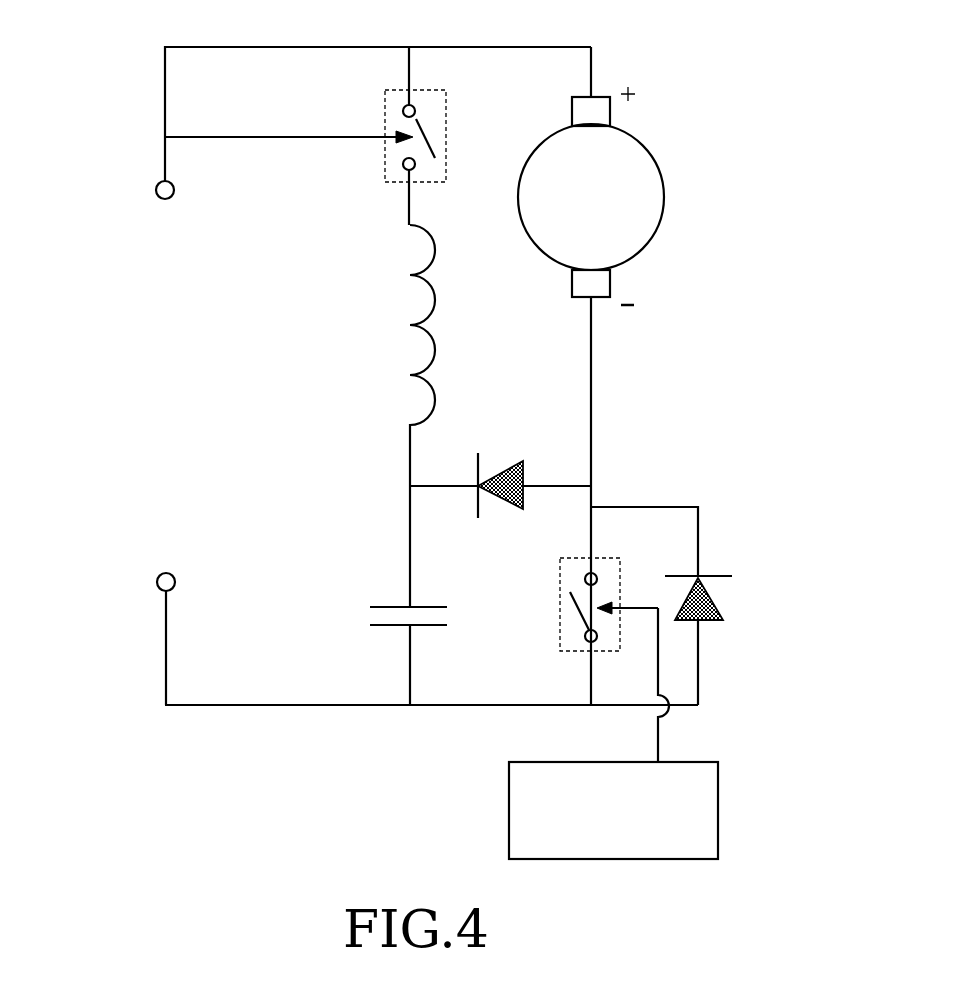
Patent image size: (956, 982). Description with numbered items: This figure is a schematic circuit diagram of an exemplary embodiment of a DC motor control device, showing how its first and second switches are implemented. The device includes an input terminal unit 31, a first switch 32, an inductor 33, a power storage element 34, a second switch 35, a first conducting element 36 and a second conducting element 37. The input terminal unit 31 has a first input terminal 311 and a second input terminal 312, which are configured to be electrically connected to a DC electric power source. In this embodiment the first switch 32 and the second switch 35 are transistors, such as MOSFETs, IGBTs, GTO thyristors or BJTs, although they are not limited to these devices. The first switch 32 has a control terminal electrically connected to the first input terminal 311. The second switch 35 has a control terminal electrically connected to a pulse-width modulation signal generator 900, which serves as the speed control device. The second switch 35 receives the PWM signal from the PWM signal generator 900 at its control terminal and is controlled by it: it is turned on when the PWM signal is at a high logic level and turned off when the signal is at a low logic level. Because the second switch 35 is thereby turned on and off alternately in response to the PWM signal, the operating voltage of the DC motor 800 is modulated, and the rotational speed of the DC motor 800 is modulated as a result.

The input terminal unit 31 is at (163, 85).
The first input terminal 311 is at (162, 180).
The second input terminal 312 is at (162, 592).
The first switch 32 is at (435, 158).
The inductor 33 is at (410, 300).
The power storage element 34 is at (385, 600).
The second switch 35 is at (558, 605).
The first conducting element 36 is at (513, 467).
The second conducting element 37 is at (718, 608).
The DC motor 800 is at (625, 168).
The pulse-width modulation (PWM) signal generator 900 is at (720, 797).